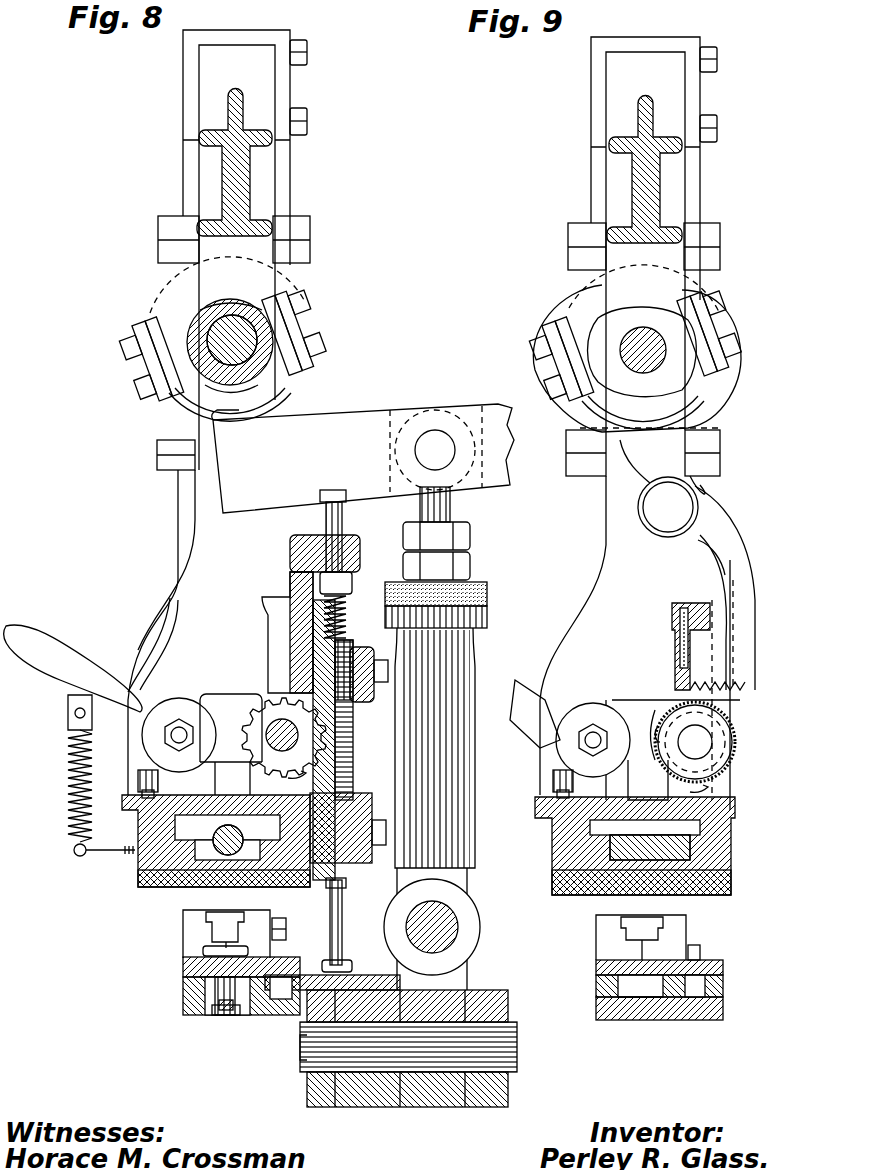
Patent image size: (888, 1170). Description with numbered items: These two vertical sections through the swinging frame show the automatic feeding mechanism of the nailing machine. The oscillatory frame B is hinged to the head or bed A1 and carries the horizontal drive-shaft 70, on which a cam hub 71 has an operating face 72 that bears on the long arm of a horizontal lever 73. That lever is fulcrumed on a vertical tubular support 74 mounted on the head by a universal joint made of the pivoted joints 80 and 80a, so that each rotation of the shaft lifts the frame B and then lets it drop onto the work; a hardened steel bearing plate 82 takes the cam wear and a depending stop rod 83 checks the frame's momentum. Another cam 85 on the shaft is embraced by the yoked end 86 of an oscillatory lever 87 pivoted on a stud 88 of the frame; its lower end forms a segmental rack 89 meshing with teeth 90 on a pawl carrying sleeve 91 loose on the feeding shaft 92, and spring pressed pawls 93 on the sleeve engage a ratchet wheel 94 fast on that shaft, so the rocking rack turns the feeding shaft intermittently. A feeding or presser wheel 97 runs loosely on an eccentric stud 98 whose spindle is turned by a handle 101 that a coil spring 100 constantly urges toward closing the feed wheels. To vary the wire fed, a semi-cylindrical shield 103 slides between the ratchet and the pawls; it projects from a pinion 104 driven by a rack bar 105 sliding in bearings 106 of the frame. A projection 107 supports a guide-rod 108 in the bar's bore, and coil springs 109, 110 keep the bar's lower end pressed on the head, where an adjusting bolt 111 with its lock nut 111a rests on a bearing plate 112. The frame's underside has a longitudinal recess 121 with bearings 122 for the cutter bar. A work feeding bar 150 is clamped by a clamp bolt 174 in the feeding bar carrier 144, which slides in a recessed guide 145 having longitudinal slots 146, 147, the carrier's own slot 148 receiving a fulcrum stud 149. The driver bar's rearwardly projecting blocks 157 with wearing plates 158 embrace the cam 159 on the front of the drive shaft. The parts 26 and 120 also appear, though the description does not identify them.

In FIG. 8, the oscillatory frame B is at (250, 178).
In FIG. 9, the oscillatory frame B is at (637, 168).
In FIG. 8, the frame 26 is at (161, 632).
In FIG. 9, the frame 26 is at (635, 643).
In FIG. 8, the horizontal drive-shaft 70 is at (250, 345).
In FIG. 9, the horizontal drive-shaft 70 is at (660, 352).
In FIG. 8, the cam hub 71 is at (225, 305).
In FIG. 8, the operating face 72 is at (231, 395).
In FIG. 8, the horizontal lever 73 is at (363, 458).
In FIG. 8, the vertical tubular support 74 is at (460, 668).
In FIG. 8, the pivoted joint 80 is at (450, 925).
In FIG. 8, the pivoted joint 80a is at (517, 1045).
In FIG. 8, the hardened steel bearing plate 82 is at (242, 416).
In FIG. 8, the stop rod 83 is at (335, 512).
In FIG. 8, the cam 85 is at (185, 320).
In FIG. 9, the cam 85 is at (642, 352).
In FIG. 8, the yoked end 86 is at (300, 395).
In FIG. 9, the yoked end 86 is at (705, 390).
In FIG. 9, the oscillatory lever 87 is at (726, 530).
In FIG. 9, the stud 88 is at (668, 507).
In FIG. 9, the segmental rack 89 is at (742, 685).
In FIG. 9, the teeth 90 is at (737, 742).
In FIG. 9, the pawl carrying sleeve 91 is at (672, 710).
In FIG. 8, the feeding shaft 92 is at (274, 745).
In FIG. 9, the feeding shaft 92 is at (730, 770).
In FIG. 9, the spring pressed pawls 93 is at (690, 672).
In FIG. 9, the ratchet wheel 94 is at (658, 722).
In FIG. 8, the feeding or presser wheel 97 is at (182, 706).
In FIG. 9, the feeding or presser wheel 97 is at (598, 710).
In FIG. 8, the cylindrical stud 98 is at (176, 728).
In FIG. 9, the cylindrical stud 98 is at (595, 747).
In FIG. 8, the coil spring 100 is at (68, 770).
In FIG. 8, the handle 101 is at (91, 655).
In FIG. 9, the handle 101 is at (535, 714).
In FIG. 9, the semi-cylindrical shield 103 is at (702, 750).
In FIG. 8, the pinion 104 is at (272, 707).
In FIG. 8, the rack bar 105 is at (290, 680).
In FIG. 8, the bearings 106 is at (372, 795).
In FIG. 8, the projection 107 is at (355, 540).
In FIG. 8, the guide-rod 108 is at (375, 650).
In FIG. 8, the coil spring 109 is at (345, 762).
In FIG. 8, the coil spring 110 is at (352, 592).
In FIG. 8, the adjusting bolt 111 is at (340, 962).
In FIG. 8, the lock nut 111a is at (342, 925).
In FIG. 8, the bearing plate 112 is at (372, 982).
In FIG. 8, the base 120 is at (178, 855).
In FIG. 9, the base 120 is at (612, 845).
In FIG. 8, the longitudinal recess 121 is at (231, 744).
In FIG. 9, the longitudinal recess 121 is at (620, 722).
In FIG. 8, the bearings 122 is at (272, 820).
In FIG. 9, the bearings 122 is at (592, 822).
In FIG. 8, the feeding bar carrier 144 is at (185, 920).
In FIG. 9, the feeding bar carrier 144 is at (692, 950).
In FIG. 8, the recessed guide 145 is at (183, 965).
In FIG. 9, the recessed guide 145 is at (715, 1005).
In FIG. 8, the longitudinal slot 146 is at (250, 948).
In FIG. 8, the longitudinal slot 147 is at (234, 1016).
In FIG. 9, the longitudinal slot 148 is at (641, 992).
In FIG. 8, the stud 149 is at (216, 1016).
In FIG. 8, the work feeding bar 150 is at (225, 925).
In FIG. 9, the work feeding bar 150 is at (660, 935).
In FIG. 8, the rearwardly projecting blocks 157 is at (300, 240).
In FIG. 9, the rearwardly projecting blocks 157 is at (712, 248).
In FIG. 9, the wearing plates 158 is at (712, 268).
In FIG. 8, the cam 159 is at (148, 322).
In FIG. 9, the cam 159 is at (560, 305).
In FIG. 8, the clamp bolt 174 is at (290, 940).
In FIG. 9, the clamp bolt 174 is at (702, 960).
In FIG. 8, the head or bed A1 is at (352, 1107).